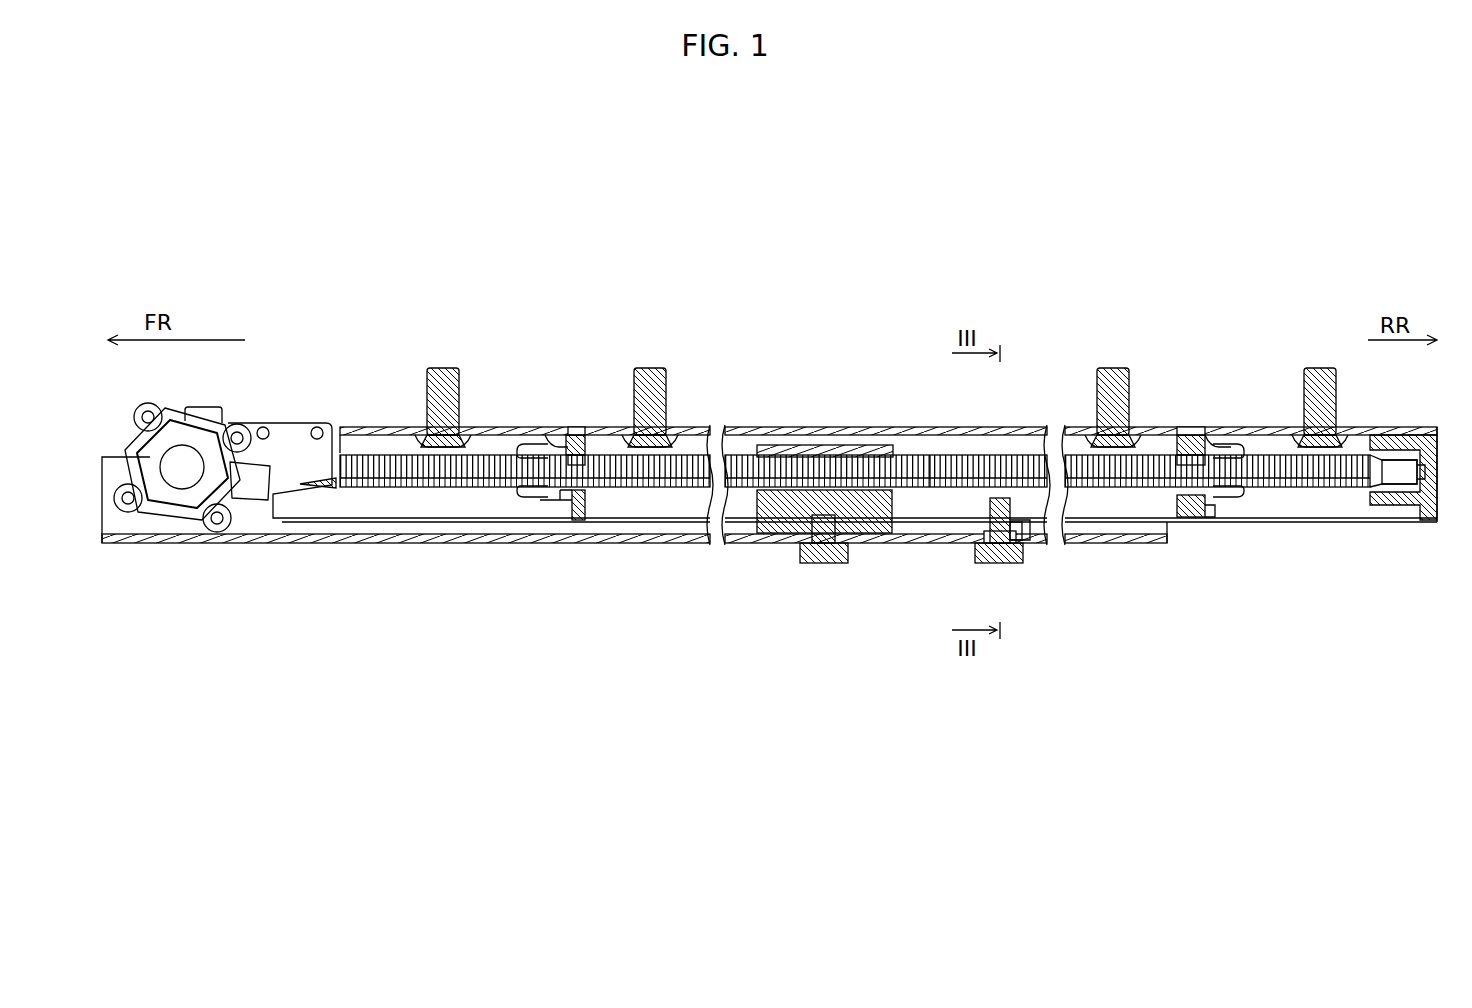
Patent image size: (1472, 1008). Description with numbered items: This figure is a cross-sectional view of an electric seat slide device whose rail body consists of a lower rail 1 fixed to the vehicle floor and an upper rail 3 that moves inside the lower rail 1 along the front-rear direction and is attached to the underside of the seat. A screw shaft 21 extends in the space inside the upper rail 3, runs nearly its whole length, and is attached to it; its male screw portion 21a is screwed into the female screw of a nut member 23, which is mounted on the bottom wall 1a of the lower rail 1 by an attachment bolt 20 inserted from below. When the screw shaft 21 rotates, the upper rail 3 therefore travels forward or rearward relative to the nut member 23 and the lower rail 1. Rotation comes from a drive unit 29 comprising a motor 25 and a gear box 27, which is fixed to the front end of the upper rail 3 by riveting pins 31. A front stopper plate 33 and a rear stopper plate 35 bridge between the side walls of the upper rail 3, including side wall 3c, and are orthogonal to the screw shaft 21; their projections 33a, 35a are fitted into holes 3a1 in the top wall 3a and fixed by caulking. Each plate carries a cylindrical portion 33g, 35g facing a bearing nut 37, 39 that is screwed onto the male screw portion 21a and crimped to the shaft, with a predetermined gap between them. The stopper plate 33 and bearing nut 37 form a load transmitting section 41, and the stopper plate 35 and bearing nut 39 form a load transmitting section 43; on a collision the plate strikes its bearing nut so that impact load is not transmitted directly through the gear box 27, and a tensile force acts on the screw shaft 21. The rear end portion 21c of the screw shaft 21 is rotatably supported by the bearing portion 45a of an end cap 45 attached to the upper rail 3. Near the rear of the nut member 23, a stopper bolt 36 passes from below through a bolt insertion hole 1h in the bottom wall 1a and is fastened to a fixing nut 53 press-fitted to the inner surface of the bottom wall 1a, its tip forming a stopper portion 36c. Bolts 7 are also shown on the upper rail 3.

The lower rail 1 is at (634, 575).
The bottom wall 1a is at (372, 543).
The bolt insertion hole 1h is at (1000, 545).
The upper rail 3 is at (859, 452).
The top wall 3a is at (790, 445).
The holes 3a1 is at (583, 445).
The side wall 3c is at (1300, 510).
The bolt 7 is at (448, 368).
The attachment bolt 20 is at (822, 563).
The screw shaft 21 is at (874, 481).
The male screw portion 21a is at (950, 470).
The rear end portion 21c is at (1405, 482).
The nut member 23 is at (865, 530).
The motor 25 is at (205, 445).
The gear box 27 is at (302, 440).
The drive unit 29 is at (223, 448).
The riveting pins 31 is at (317, 440).
The stopper plate 33 is at (553, 450).
The projection 33a is at (582, 436).
The cylindrical portion 33g is at (560, 442).
The stopper plate 35 is at (1233, 448).
The projection 35a is at (1197, 437).
The cylindrical portion 35g is at (1212, 442).
The stopper bolt 36 is at (1014, 543).
The stopper portion 36c is at (1028, 528).
The bearing nut 37 is at (530, 498).
The bearing nut 39 is at (1230, 500).
The load transmitting section 41 is at (552, 472).
The load transmitting section 43 is at (1227, 471).
The end cap 45 is at (1413, 487).
The bearing portion 45a is at (1392, 500).
The fixing nut 53 is at (1018, 538).